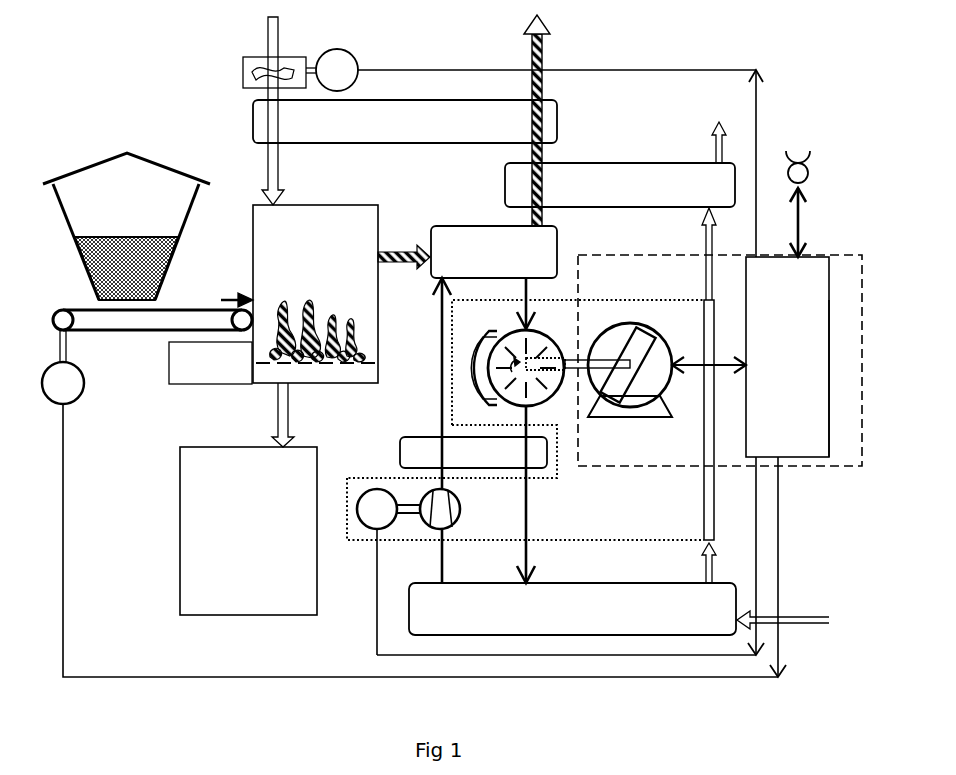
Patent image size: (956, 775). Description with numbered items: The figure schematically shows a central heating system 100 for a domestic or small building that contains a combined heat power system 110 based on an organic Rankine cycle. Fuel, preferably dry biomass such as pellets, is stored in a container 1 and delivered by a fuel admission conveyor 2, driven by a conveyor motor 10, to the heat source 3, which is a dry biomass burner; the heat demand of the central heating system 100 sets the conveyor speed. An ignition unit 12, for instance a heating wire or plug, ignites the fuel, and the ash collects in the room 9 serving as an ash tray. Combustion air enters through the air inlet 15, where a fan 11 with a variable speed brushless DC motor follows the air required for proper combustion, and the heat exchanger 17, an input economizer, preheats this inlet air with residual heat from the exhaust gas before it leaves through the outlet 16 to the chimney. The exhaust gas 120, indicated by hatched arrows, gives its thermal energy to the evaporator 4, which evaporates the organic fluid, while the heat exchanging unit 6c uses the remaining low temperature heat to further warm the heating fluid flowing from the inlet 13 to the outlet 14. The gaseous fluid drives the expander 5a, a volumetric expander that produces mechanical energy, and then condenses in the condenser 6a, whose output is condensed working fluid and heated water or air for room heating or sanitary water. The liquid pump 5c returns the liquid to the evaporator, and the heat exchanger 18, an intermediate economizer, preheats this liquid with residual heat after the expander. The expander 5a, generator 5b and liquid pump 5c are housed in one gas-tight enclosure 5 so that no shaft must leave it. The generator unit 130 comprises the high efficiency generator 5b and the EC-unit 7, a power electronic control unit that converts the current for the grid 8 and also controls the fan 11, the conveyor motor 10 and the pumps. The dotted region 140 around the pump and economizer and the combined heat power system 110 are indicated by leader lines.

The central heating system 100 is at (186, 105).
The container 1 is at (126, 226).
The fuel admission conveyor 2 is at (152, 306).
The conveyor motor 10 is at (75, 367).
The ignition unit 12 is at (211, 338).
The heat source 3 is at (315, 294).
The room 9 is at (248, 499).
The air inlet 15 is at (258, 108).
The fan 11 is at (311, 65).
The heat exchanger 17 is at (405, 121).
The outlet 16 is at (548, 117).
The exhaust gas 120 is at (542, 63).
The outlet 14 is at (684, 138).
The heat exchanging unit 6c is at (620, 185).
The evaporator 4 is at (467, 404).
The gas-tight enclosure 5 is at (720, 372).
The expander 5a is at (577, 362).
The generator 5b is at (630, 359).
The liquid pump 5c is at (420, 572).
The EC-unit 7 is at (750, 357).
The grid 8 is at (798, 195).
The heat exchanger 18 is at (452, 451).
The condenser 6a is at (572, 520).
The inlet 13 is at (783, 606).
The generator unit 130 is at (811, 472).
The working fluid circuit 140 is at (403, 533).
The combined heat power system 110 is at (352, 542).